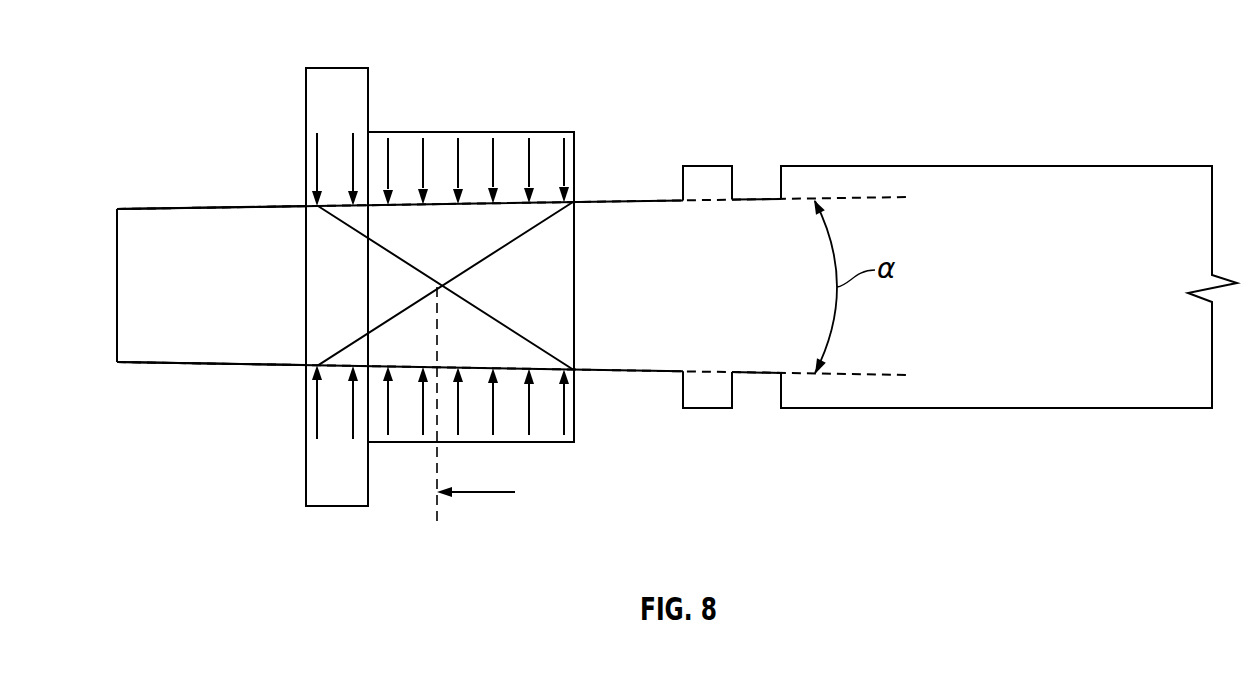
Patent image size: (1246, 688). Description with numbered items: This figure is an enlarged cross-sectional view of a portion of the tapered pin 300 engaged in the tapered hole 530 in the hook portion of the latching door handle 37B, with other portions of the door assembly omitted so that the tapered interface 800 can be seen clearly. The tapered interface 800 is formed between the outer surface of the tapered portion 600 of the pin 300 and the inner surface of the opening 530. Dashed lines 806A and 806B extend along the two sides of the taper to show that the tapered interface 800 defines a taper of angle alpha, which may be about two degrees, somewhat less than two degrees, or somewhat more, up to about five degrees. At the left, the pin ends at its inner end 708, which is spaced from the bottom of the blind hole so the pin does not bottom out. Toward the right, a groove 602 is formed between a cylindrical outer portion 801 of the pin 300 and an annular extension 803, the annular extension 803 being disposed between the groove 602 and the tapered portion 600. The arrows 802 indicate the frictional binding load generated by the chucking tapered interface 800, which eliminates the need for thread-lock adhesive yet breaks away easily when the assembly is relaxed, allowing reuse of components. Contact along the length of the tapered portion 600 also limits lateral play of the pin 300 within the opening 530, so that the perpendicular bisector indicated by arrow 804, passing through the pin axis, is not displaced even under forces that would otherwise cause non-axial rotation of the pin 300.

The tapered pin 300 is at (1080, 166).
The latching door handle 37B is at (400, 132).
The tapered hole 530 is at (408, 200).
The tapered portion 600 is at (630, 373).
The groove 602 is at (753, 405).
The inner end 708 is at (117, 286).
The tapered interface 800 is at (574, 202).
The cylindrical outer portion 801 is at (1067, 304).
The arrows indicating frictional binding load 802 is at (458, 150).
The annular extension 803 is at (707, 172).
The arrow indicating perpendicular bisector 804 is at (487, 493).
The dashed line 806A is at (843, 197).
The dashed line 806B is at (913, 410).